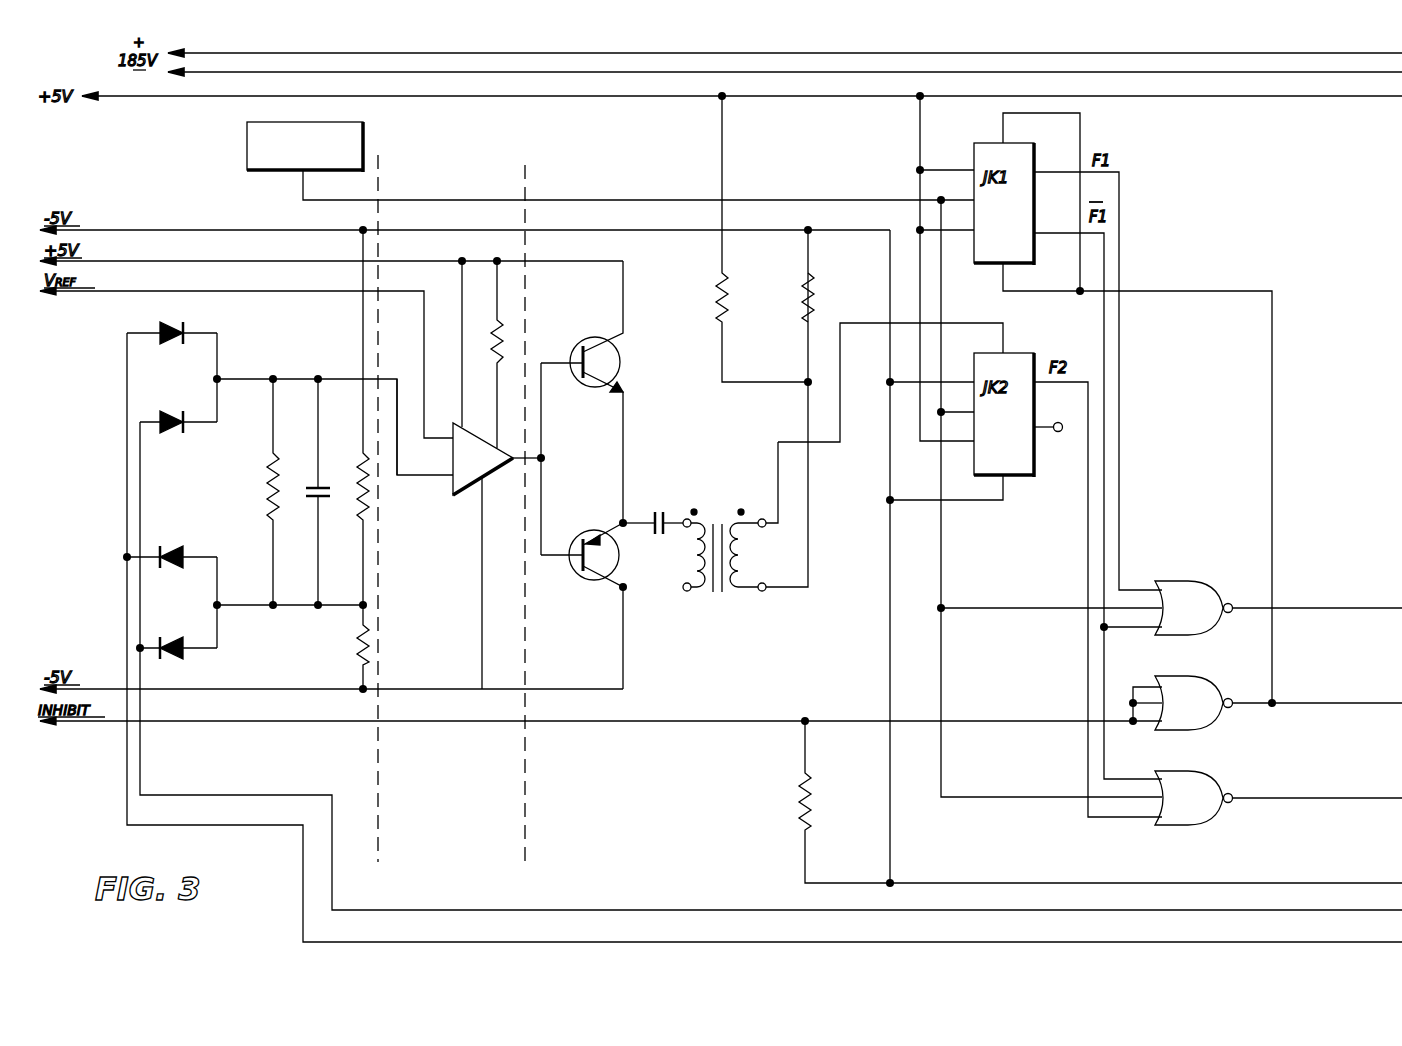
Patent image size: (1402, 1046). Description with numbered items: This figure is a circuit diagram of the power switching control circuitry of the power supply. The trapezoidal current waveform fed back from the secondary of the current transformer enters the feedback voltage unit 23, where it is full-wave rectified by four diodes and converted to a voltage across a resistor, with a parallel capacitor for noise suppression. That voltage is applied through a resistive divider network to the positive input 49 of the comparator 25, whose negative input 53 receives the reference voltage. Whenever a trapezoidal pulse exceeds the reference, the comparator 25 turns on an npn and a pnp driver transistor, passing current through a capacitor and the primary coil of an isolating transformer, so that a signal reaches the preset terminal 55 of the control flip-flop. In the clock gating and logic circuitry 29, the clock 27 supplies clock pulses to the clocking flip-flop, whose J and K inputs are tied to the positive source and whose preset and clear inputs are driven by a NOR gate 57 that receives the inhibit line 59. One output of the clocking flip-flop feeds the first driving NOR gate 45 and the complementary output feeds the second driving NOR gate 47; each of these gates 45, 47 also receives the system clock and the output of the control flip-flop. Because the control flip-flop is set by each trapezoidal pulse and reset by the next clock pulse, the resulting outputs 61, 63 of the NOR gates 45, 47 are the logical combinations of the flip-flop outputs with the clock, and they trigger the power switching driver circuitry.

The feedback voltage unit 23 is at (268, 772).
The comparator 25 is at (470, 487).
The clock 27 is at (364, 143).
The clock gating and logic circuitry 29 is at (622, 772).
The first driving NOR gate 45 is at (1185, 584).
The second driving NOR gate 47 is at (1192, 829).
The positive input of the comparator 49 is at (409, 478).
The negative input of the comparator 53 is at (405, 292).
The preset terminal of flip-flop JK2 55 is at (838, 444).
The NOR gate 57 is at (1193, 690).
The inhibit line 59 is at (658, 720).
The output of first driver NOR gate 61 is at (1304, 607).
The output of second driver NOR gate 63 is at (1306, 800).